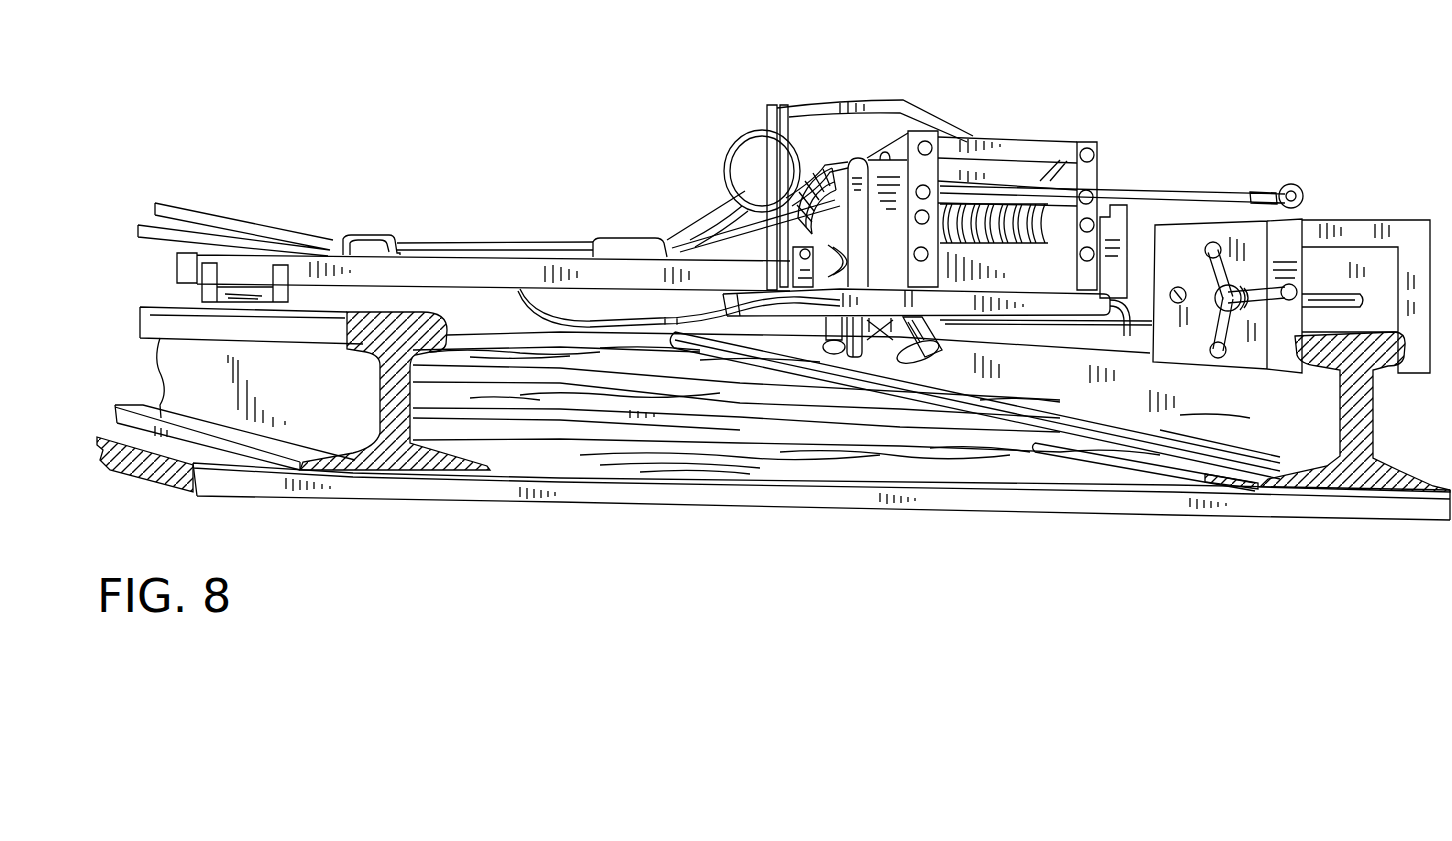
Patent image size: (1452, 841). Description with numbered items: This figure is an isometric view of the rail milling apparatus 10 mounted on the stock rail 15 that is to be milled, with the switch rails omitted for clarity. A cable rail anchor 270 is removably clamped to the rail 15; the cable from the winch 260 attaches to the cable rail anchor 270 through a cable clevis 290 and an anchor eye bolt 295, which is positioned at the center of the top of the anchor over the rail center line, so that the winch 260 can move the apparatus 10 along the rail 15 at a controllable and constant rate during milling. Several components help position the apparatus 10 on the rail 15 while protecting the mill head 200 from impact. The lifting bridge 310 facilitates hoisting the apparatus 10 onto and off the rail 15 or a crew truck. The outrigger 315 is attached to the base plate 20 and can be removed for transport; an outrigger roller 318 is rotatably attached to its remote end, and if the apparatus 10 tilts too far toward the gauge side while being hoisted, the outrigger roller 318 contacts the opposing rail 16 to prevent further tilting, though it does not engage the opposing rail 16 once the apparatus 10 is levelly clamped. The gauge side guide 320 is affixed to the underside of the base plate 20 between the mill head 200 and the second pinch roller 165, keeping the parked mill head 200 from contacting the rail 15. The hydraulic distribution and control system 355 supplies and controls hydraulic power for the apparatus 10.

The apparatus 10 is at (1180, 64).
The rail 15 is at (1370, 423).
The opposing rail 16 is at (390, 402).
The base plate 20 is at (1129, 336).
The second pinch roller 165 is at (827, 337).
The mill head 200 is at (884, 357).
The winch 260 is at (1050, 137).
The cable rail anchor 270 is at (1414, 220).
The cable clevis 290 is at (1277, 193).
The anchor eye bolt 295 is at (1302, 188).
The lifting bridge 310 is at (855, 105).
The outrigger 315 is at (437, 250).
The outrigger roller 318 is at (250, 282).
The gauge side guide 320 is at (843, 353).
The hydraulic distribution and control system 355 is at (731, 170).